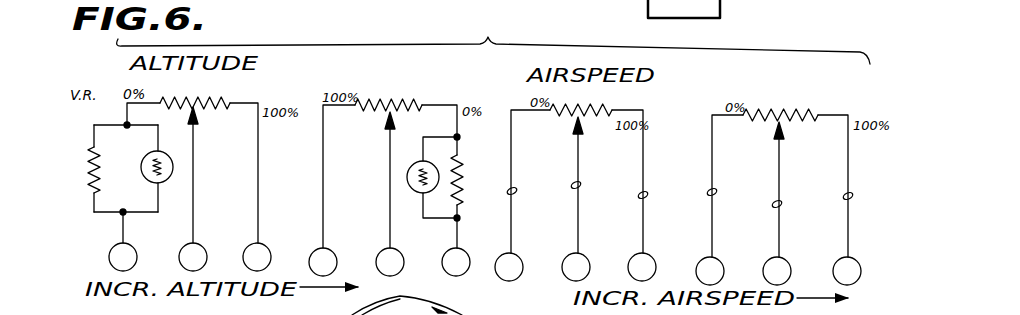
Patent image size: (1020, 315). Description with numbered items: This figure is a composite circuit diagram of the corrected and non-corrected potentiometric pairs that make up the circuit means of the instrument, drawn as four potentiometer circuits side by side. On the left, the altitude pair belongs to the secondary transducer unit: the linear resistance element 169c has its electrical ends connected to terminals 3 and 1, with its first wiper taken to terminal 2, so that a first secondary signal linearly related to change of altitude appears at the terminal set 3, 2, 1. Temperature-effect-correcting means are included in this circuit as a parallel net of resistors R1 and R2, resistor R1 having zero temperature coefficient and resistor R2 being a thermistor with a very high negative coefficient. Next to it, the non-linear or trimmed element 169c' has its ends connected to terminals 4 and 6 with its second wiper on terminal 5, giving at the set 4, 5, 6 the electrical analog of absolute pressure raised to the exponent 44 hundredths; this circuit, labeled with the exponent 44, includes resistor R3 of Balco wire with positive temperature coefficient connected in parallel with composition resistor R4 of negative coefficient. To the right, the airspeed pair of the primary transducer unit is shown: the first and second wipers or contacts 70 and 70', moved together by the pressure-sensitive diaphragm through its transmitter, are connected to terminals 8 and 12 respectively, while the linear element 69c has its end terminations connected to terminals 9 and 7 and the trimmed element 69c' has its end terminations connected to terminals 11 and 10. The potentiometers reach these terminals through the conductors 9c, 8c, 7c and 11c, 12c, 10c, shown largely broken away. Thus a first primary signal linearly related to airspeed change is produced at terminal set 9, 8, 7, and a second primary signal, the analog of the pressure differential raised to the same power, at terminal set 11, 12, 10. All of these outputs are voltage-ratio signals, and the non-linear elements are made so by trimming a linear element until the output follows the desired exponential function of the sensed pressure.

The support 44 is at (590, 72).
The linear resistance element 169c is at (211, 160).
The non-linear element 169c' is at (412, 163).
The first wiper or contact 70 is at (413, 180).
The second wiper or contact 70' is at (585, 184).
The linear element 69c is at (587, 167).
The non-linear or trimmed element 69c' is at (793, 171).
The conductor 9c is at (516, 190).
The conductor 8c is at (580, 184).
The conductor 7c is at (647, 194).
The conductor 11c is at (716, 191).
The conductor 12c is at (781, 203).
The conductor 10c is at (852, 195).
The resistor R1 is at (80, 168).
The thermistor R2 is at (160, 168).
The resistor R3 is at (427, 177).
The resistor R4 is at (468, 192).
The terminal 1 is at (257, 257).
The terminal 2 is at (193, 257).
The terminal 3 is at (123, 257).
The terminal 4 is at (456, 262).
The terminal 5 is at (390, 262).
The terminal 6 is at (323, 262).
The terminal 7 is at (642, 267).
The terminal 8 is at (576, 267).
The terminal 9 is at (509, 267).
The terminal 10 is at (847, 271).
The terminal 11 is at (710, 271).
The terminal 12 is at (777, 271).